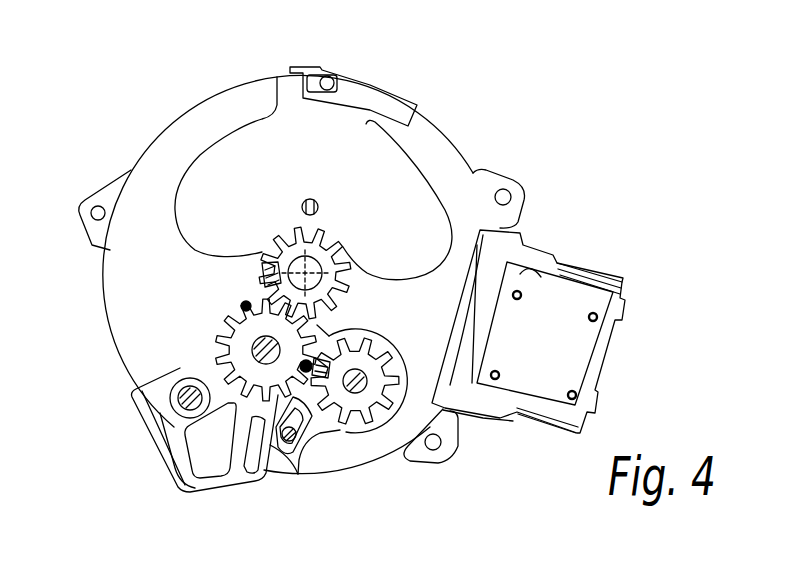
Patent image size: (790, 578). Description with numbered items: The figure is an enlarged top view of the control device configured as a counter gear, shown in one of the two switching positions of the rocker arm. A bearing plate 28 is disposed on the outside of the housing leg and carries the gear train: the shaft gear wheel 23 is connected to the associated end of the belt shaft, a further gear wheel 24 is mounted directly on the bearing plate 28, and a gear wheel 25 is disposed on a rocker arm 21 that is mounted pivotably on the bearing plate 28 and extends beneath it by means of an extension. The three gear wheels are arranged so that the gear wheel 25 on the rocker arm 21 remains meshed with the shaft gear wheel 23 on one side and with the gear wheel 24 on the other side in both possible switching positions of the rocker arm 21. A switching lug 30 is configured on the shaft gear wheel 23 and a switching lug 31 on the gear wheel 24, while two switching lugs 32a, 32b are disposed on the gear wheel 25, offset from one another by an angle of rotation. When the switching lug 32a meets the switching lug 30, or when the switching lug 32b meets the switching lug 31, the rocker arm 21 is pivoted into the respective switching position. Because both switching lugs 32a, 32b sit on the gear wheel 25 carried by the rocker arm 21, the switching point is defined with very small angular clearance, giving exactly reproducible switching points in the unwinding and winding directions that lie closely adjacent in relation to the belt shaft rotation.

The rocker arm 21 is at (150, 420).
The shaft gear wheel 23 is at (342, 249).
The gear wheel mounted on the bearing plate 24 is at (372, 417).
The gear wheel mounted on the rocker arm 25 is at (222, 321).
The bearing plate 28 is at (425, 142).
The switching lug 30 is at (263, 263).
The switching lug 31 is at (337, 418).
The switching lug 32a is at (84, 225).
The switching lug 32b is at (297, 474).